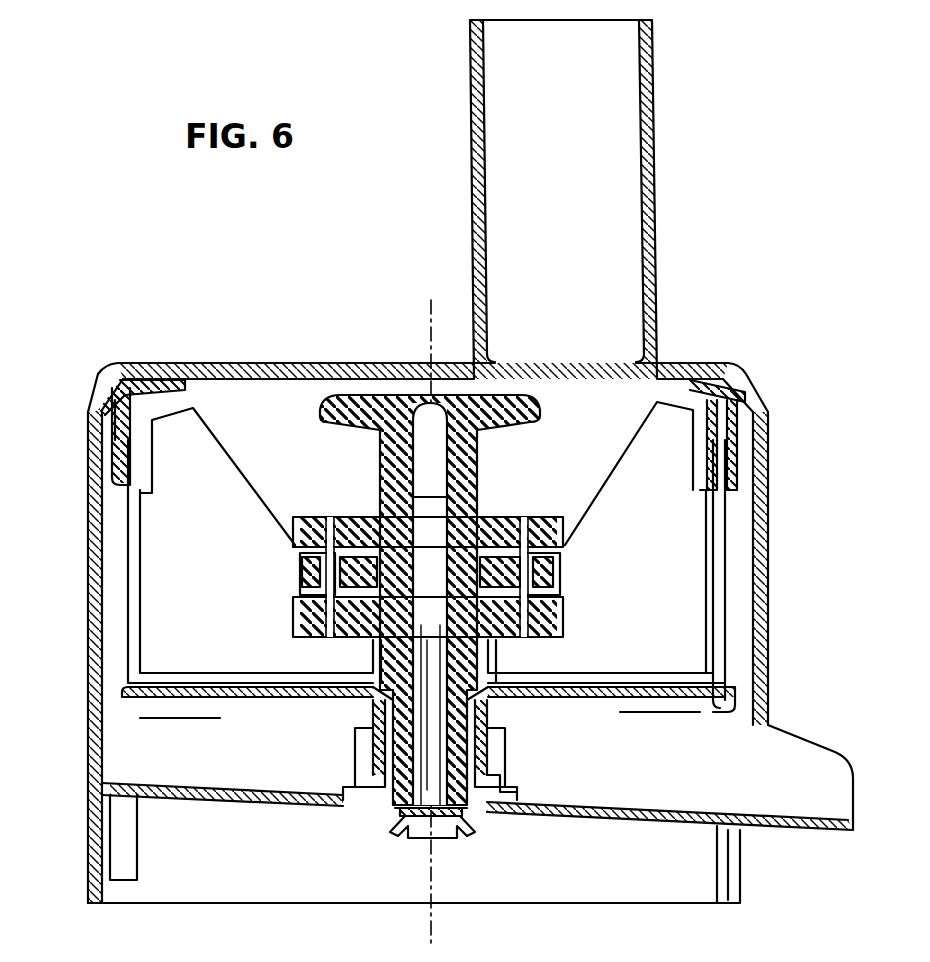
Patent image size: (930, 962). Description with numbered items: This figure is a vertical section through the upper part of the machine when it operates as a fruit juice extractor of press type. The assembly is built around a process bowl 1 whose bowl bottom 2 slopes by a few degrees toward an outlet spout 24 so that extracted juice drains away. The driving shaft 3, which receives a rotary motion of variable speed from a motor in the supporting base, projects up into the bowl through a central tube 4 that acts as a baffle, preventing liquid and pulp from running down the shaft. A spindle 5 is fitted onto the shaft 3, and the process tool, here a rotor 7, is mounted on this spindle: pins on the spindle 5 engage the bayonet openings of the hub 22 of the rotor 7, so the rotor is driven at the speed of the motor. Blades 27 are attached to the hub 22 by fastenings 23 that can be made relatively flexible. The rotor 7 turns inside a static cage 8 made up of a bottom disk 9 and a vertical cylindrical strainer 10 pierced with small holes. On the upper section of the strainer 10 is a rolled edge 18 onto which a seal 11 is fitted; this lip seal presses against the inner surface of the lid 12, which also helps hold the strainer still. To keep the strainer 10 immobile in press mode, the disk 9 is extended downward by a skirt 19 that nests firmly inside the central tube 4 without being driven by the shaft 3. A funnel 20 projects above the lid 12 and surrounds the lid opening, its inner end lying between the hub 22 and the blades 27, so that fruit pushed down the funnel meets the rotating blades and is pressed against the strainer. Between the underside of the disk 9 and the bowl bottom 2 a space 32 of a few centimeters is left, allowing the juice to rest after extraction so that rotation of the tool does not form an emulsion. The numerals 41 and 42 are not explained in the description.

The process bowl 1 is at (768, 577).
The bowl bottom 2 is at (265, 800).
The driving shaft 3 is at (447, 830).
The tube 4 is at (500, 768).
The spindle 5 is at (470, 722).
The rotor 7 is at (355, 505).
The static cage 8 is at (740, 515).
The disk 9 is at (687, 690).
The strainer 10 is at (128, 592).
The seal 11 is at (138, 445).
The lid 12 is at (283, 371).
The rolled edge 18 is at (728, 430).
The skirt 19 is at (372, 718).
The funnel 20 is at (657, 216).
The hub 22 is at (322, 417).
The fastenings 23 is at (527, 515).
The outlet spout 24 is at (795, 747).
The blades 27 is at (416, 489).
The space 32 is at (158, 743).
The retaining ring 41 is at (513, 790).
The corner seal 42 is at (198, 385).